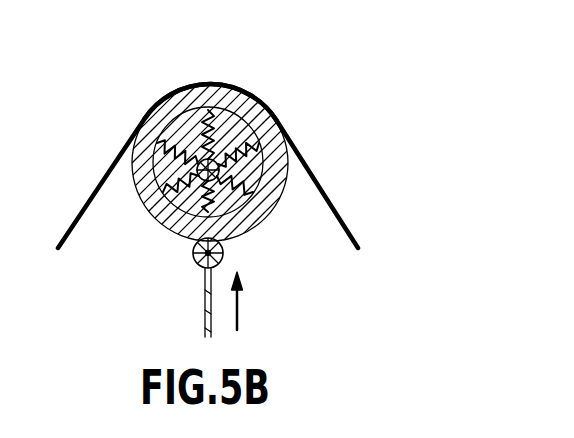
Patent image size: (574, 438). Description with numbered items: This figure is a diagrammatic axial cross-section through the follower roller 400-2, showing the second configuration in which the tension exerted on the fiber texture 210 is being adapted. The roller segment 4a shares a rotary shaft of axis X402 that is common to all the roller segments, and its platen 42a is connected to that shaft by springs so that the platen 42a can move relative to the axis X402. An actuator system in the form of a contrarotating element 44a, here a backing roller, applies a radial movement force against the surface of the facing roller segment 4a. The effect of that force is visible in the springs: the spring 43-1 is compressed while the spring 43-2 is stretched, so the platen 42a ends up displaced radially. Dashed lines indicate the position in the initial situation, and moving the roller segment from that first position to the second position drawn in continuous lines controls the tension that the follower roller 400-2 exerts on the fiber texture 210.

The follower roller 400-2 is at (90, 280).
The fiber texture 210 is at (82, 210).
The platen 42a is at (196, 93).
The roller segment 4a is at (296, 216).
The spring 43-2 is at (232, 132).
The spring 43-1 is at (216, 203).
The axis of the rotary shaft X402 is at (199, 162).
The contrarotating element 44a is at (188, 273).